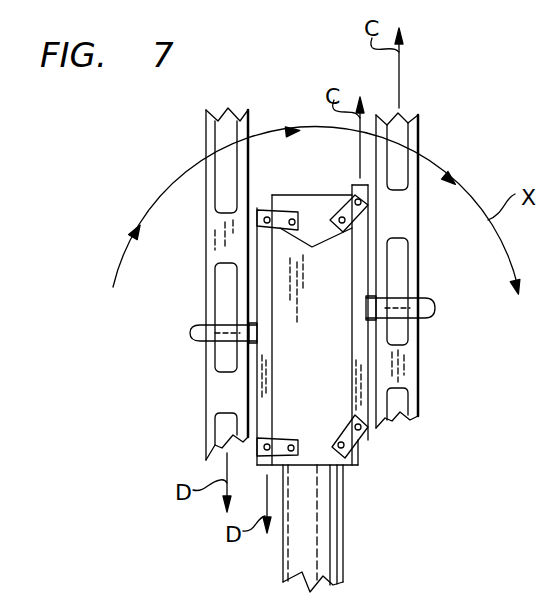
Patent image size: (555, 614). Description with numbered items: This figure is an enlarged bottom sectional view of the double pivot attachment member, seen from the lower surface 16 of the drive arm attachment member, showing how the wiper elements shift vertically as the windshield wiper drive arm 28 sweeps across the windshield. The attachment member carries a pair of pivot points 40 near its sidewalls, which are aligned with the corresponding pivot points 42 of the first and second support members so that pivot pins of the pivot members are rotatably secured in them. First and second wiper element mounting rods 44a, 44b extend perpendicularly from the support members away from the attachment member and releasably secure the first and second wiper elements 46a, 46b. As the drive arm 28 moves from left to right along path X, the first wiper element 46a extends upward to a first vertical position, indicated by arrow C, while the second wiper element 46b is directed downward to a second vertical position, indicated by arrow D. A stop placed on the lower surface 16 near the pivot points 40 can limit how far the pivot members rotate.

The lower surface 16 is at (327, 344).
The windshield wiper drive arm 28 is at (327, 536).
The pivot points 40 is at (342, 218).
The pivot points 42 is at (272, 210).
The first wiper element mounting rod 44a is at (425, 317).
The second wiper element mounting rod 44b is at (196, 336).
The first wiper element 46a is at (412, 222).
The second wiper element 46b is at (218, 228).